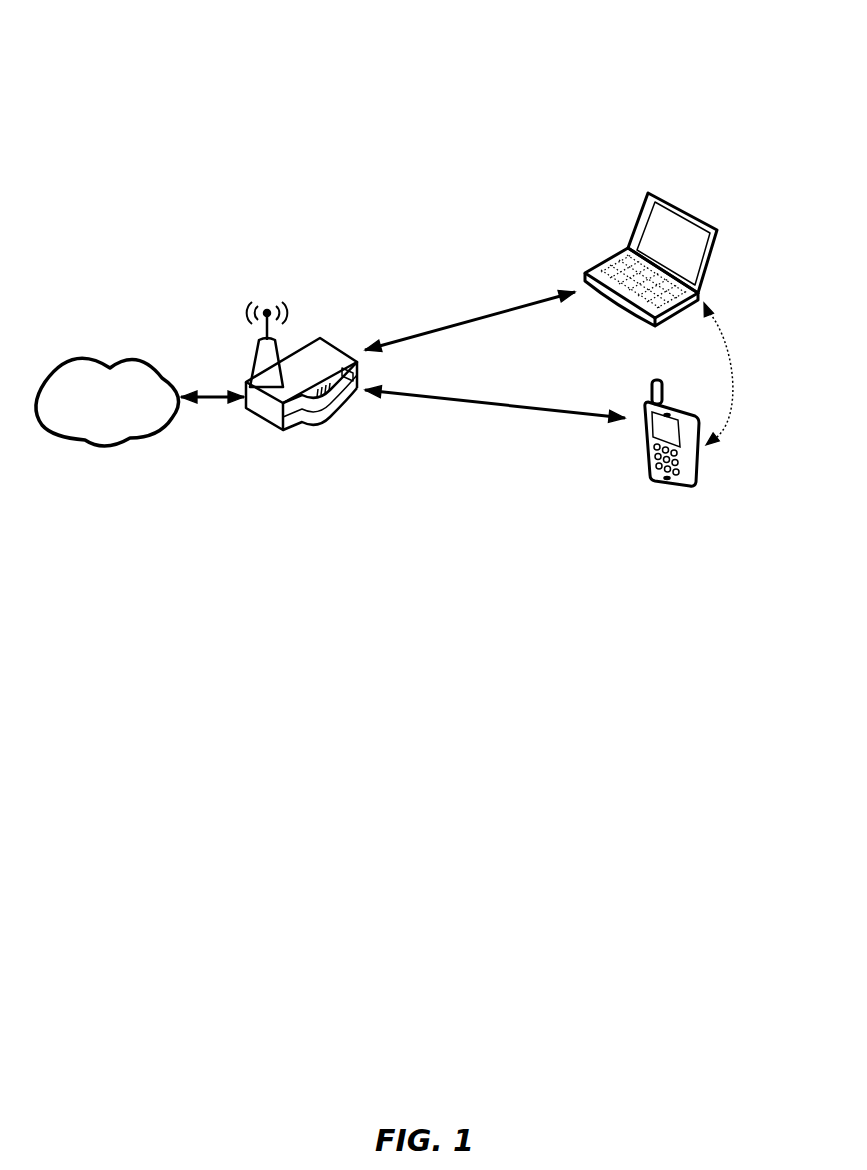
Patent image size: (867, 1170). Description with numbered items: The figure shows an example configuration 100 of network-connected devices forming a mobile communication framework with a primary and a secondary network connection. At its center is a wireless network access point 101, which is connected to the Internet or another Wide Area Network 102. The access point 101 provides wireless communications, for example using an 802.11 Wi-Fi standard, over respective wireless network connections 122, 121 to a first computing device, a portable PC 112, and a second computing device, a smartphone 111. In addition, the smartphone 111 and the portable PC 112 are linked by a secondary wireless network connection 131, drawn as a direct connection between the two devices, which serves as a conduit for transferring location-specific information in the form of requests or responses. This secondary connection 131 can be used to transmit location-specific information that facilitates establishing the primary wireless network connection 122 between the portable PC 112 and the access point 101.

The configuration of network-connected devices 100 is at (115, 86).
The wireless network access point 101 is at (322, 340).
The Internet or Wide Area Network 102 is at (111, 367).
The second computing device (smartphone) 111 is at (697, 480).
The first computing device (portable PC) 112 is at (707, 225).
The wireless network connection 121 is at (495, 401).
The wireless network connection 122 is at (470, 321).
The secondary wireless network connection 131 is at (735, 374).